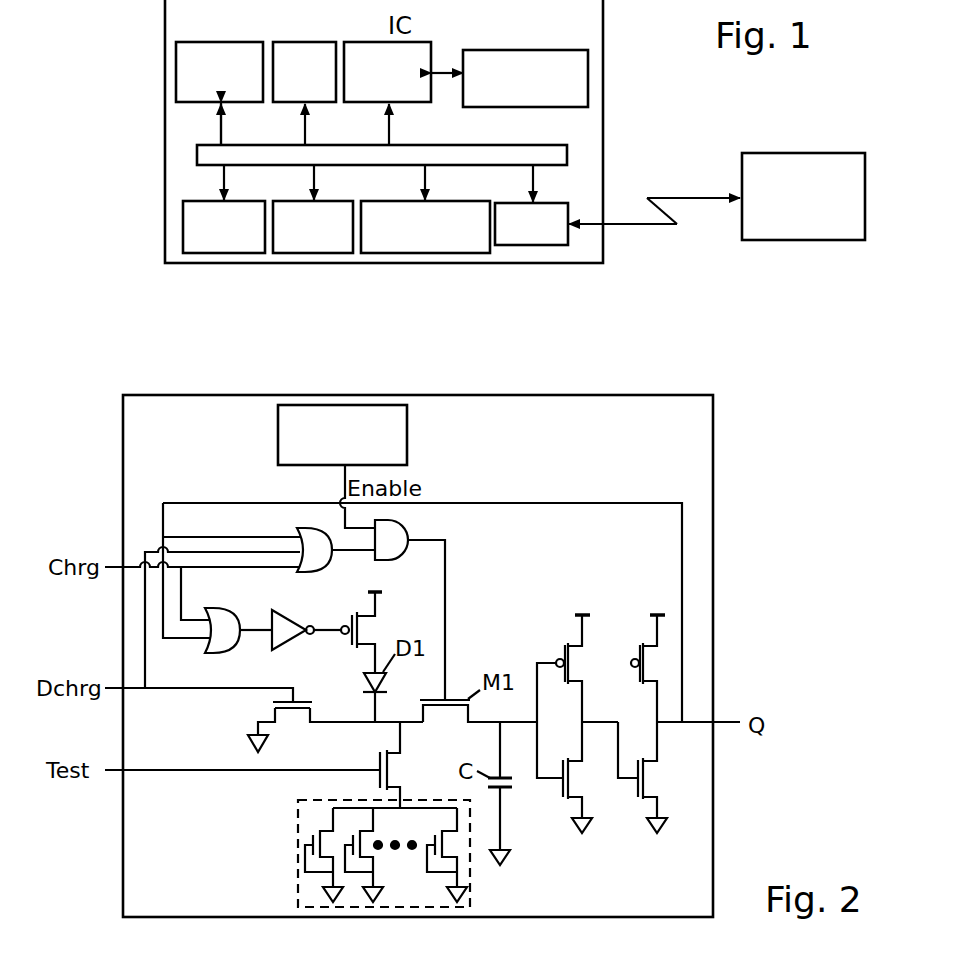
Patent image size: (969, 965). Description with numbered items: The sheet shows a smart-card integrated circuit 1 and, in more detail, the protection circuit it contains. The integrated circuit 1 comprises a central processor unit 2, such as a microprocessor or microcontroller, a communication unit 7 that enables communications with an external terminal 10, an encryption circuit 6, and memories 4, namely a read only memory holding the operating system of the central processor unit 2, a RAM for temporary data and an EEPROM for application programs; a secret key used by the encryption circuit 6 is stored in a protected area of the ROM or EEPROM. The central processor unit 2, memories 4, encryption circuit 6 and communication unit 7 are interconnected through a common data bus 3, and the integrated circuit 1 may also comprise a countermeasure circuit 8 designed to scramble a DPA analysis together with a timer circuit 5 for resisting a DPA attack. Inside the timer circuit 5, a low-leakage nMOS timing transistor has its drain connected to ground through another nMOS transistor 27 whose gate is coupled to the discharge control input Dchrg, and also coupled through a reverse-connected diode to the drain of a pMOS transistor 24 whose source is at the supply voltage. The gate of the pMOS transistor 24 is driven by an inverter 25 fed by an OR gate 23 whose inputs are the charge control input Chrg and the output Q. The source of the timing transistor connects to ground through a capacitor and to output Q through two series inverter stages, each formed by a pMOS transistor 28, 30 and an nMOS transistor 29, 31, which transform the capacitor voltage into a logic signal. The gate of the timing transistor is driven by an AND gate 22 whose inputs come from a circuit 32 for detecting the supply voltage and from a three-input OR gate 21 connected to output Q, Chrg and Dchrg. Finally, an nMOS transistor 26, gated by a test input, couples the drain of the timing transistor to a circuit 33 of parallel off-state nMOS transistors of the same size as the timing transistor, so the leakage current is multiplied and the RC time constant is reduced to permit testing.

In FIG. 1, the integrated circuit 1 is at (166, 48).
In FIG. 1, the central processor unit 2 is at (366, 101).
In FIG. 1, the common data bus 3 is at (208, 146).
In FIG. 1, the memories 4 is at (206, 201).
In FIG. 1, the timer circuit 5 is at (497, 108).
In FIG. 2, the timer circuit 5 is at (123, 452).
In FIG. 1, the encryption circuit 6 is at (206, 42).
In FIG. 1, the communication unit 7 is at (503, 203).
In FIG. 1, the countermeasure circuit 8 is at (289, 101).
In FIG. 1, the external terminal 10 is at (816, 153).
In FIG. 2, the OR gate 21 is at (295, 572).
In FIG. 2, the AND gate 22 is at (400, 534).
In FIG. 2, the OR gate 23 is at (219, 652).
In FIG. 2, the pMOS transistor 24 is at (347, 650).
In FIG. 2, the inverter 25 is at (287, 618).
In FIG. 2, the nMOS transistor 26 is at (380, 752).
In FIG. 2, the nMOS transistor 27 is at (275, 702).
In FIG. 2, the pMOS transistor 28 is at (563, 645).
In FIG. 2, the nMOS transistor 29 is at (562, 790).
In FIG. 2, the pMOS transistor 30 is at (638, 645).
In FIG. 2, the nMOS transistor 31 is at (637, 790).
In FIG. 2, the circuit for detecting supply voltage 32 is at (278, 450).
In FIG. 2, the circuit comprising a plurality of nMOS transistors 33 is at (470, 875).